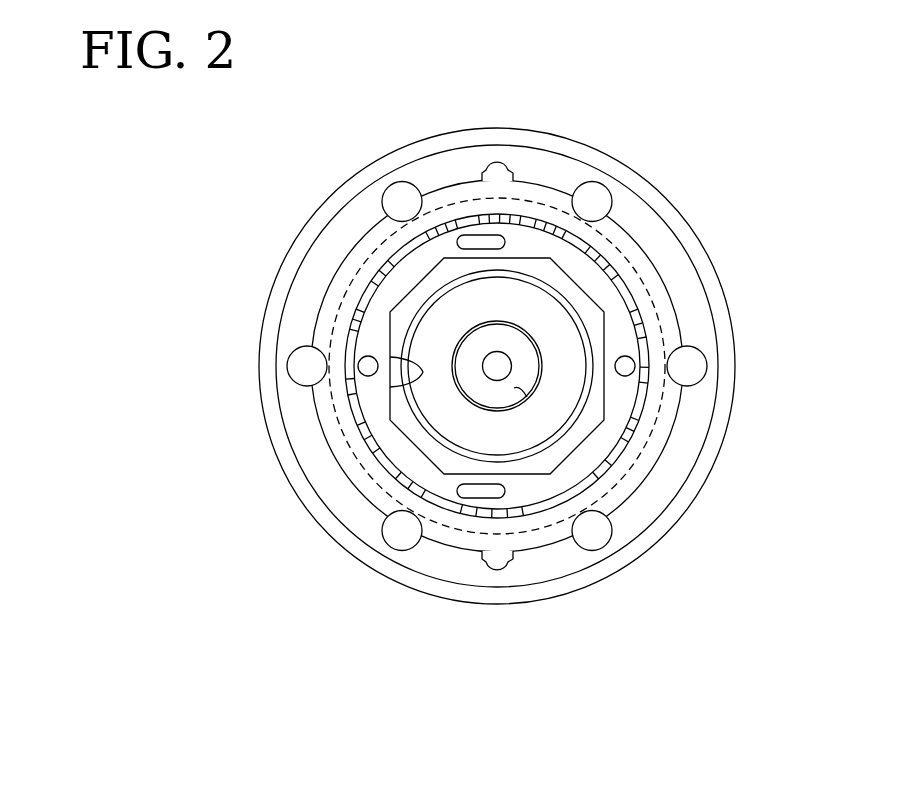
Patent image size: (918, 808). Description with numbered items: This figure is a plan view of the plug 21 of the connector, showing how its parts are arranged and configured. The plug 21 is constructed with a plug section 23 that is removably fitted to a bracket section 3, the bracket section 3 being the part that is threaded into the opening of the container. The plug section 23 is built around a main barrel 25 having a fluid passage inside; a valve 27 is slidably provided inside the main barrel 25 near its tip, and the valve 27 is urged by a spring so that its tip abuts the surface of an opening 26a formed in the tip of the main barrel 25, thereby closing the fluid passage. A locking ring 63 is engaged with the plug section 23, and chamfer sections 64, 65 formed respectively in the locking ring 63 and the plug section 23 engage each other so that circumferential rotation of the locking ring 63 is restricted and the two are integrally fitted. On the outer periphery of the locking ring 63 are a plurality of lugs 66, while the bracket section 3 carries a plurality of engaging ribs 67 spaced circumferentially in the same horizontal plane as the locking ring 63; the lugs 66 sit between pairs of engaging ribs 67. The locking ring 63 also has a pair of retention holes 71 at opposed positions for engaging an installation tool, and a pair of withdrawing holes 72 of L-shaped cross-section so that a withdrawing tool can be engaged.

The plug 21 is at (689, 121).
The bracket section 3 is at (703, 221).
The plug section 23 is at (392, 410).
The main barrel 25 is at (568, 327).
The opening 26a is at (527, 397).
The valve 27 is at (473, 357).
The locking ring 63 is at (621, 479).
The chamfer section 64 is at (415, 437).
The chamfer section 65 is at (392, 387).
The lugs 66 is at (458, 217).
The engaging ribs 67 is at (500, 217).
The retention holes 71 is at (362, 364).
The withdrawing holes 72 is at (506, 244).